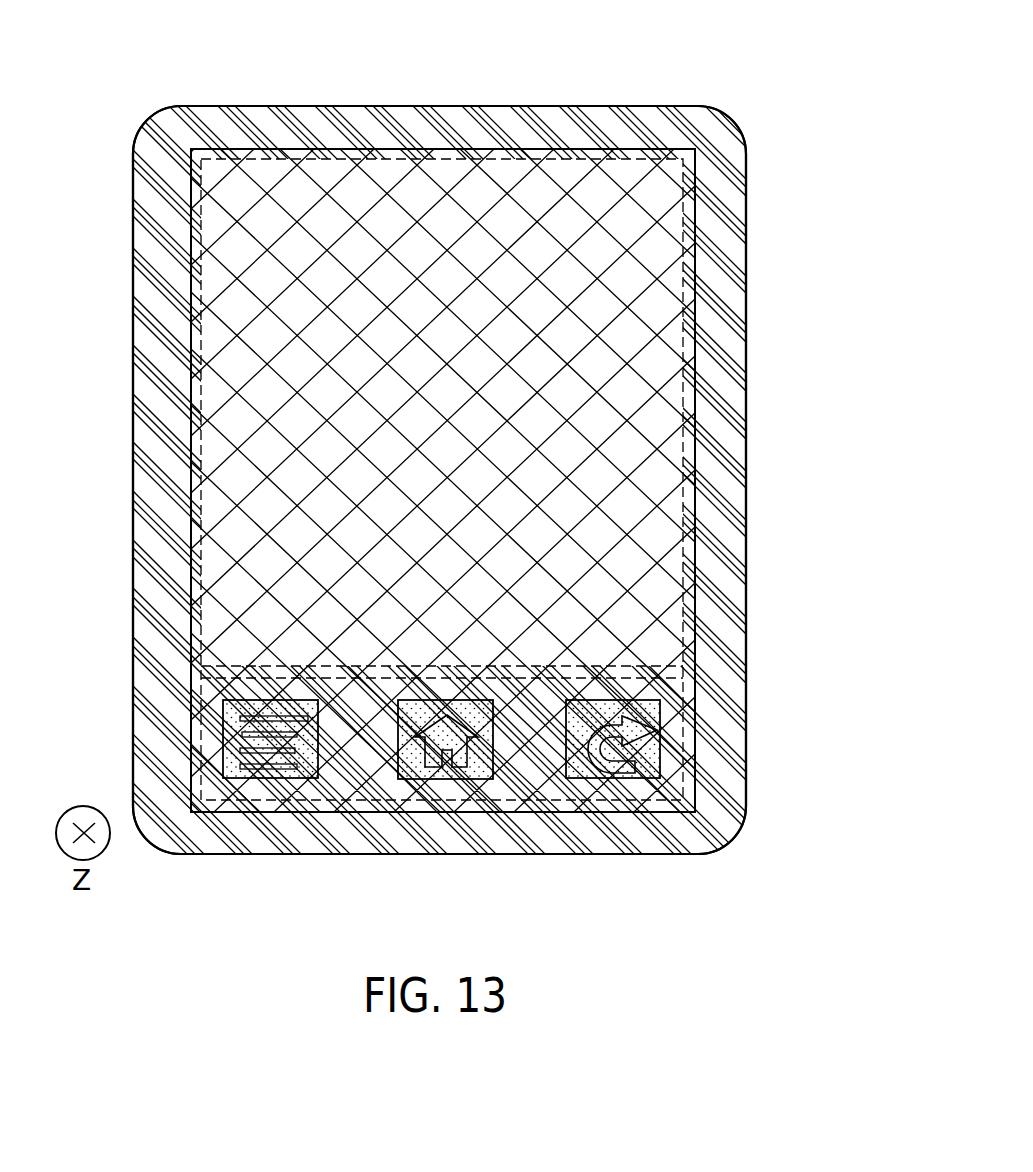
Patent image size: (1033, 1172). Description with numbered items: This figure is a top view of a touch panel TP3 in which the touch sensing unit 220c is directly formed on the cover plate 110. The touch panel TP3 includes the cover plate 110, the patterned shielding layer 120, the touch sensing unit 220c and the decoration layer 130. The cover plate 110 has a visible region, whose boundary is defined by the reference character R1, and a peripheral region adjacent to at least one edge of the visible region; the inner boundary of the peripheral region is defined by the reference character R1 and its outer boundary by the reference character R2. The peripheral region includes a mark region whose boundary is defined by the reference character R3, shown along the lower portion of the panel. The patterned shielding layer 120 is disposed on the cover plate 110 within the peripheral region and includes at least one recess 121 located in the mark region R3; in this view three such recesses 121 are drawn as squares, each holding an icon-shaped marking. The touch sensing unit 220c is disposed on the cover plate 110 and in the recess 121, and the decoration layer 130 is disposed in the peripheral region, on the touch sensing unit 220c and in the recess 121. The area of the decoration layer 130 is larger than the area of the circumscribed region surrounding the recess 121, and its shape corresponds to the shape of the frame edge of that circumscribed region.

The touch panel TP3 is at (712, 101).
The boundary of the visible region R1 is at (683, 240).
The outer boundary of the peripheral region R2 is at (747, 325).
The boundary of the mark region R3 is at (694, 709).
The cover plate 110 is at (747, 768).
The patterned shielding layer 120 is at (727, 423).
The recess 121 is at (253, 767).
The decoration layer 130 is at (319, 762).
The touch sensing unit 220c is at (665, 530).